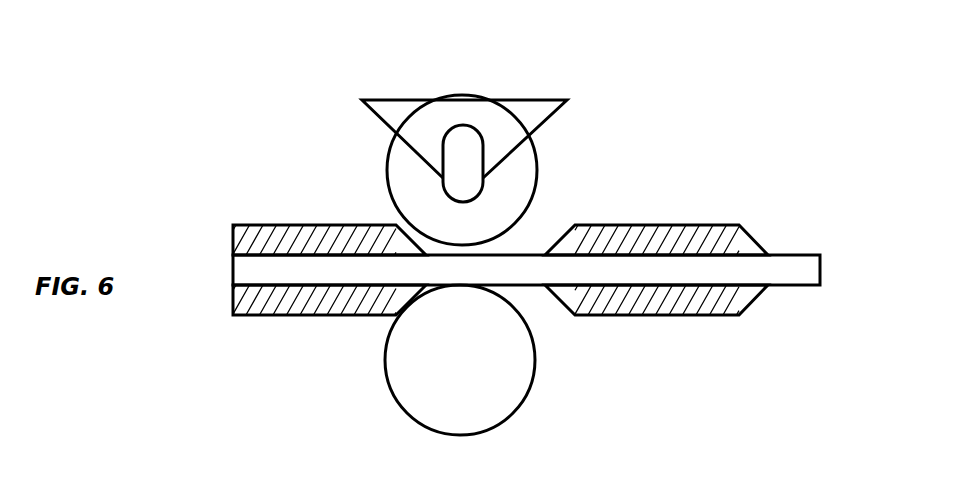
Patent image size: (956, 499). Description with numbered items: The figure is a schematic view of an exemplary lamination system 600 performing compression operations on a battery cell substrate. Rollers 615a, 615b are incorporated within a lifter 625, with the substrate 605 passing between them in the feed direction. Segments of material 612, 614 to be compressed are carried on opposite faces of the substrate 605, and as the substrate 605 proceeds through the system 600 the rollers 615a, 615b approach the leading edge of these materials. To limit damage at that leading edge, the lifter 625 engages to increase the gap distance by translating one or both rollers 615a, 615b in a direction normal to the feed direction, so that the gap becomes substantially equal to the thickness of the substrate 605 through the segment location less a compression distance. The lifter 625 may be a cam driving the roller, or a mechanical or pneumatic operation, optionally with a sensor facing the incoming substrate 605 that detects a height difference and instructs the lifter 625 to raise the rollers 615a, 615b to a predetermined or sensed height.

The lamination system 600 is at (196, 88).
The substrate 605 is at (790, 255).
The material 612 is at (312, 225).
The material 614 is at (312, 315).
The roller 615a is at (538, 182).
The roller 615b is at (532, 377).
The lifter 625 is at (550, 98).